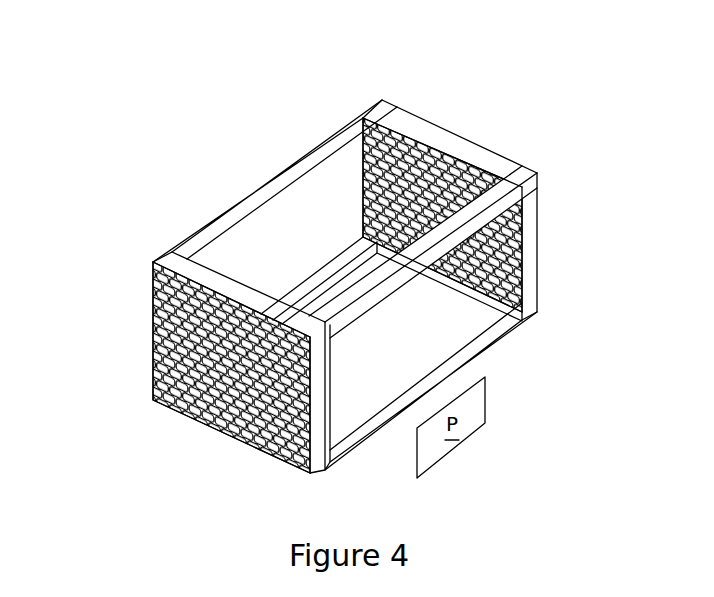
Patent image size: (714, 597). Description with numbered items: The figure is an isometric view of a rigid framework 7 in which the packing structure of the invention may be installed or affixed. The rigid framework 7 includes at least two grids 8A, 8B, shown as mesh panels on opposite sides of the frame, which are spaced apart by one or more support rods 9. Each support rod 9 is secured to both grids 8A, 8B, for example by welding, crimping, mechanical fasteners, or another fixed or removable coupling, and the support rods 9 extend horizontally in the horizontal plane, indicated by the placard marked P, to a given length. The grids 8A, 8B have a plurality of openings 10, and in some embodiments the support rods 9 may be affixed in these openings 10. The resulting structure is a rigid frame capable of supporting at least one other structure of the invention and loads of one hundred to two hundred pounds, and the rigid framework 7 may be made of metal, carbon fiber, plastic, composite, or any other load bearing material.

The rigid framework 7 is at (338, 251).
The grid 8A is at (165, 255).
The grid 8B is at (382, 108).
The support rod 9 is at (342, 133).
The opening 10 is at (173, 363).